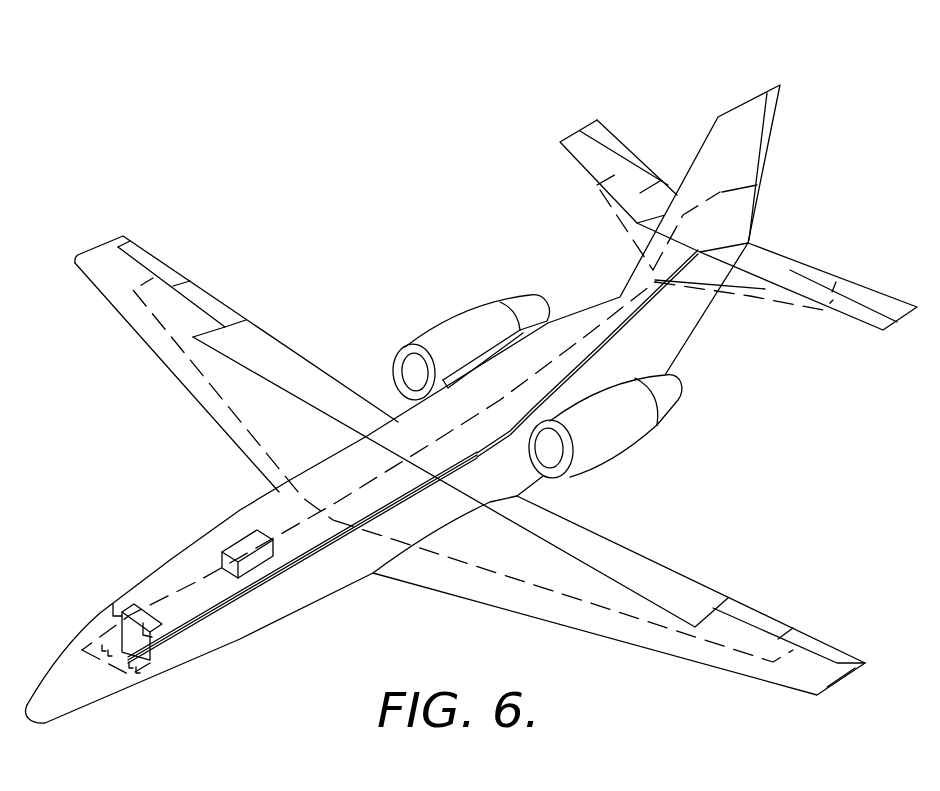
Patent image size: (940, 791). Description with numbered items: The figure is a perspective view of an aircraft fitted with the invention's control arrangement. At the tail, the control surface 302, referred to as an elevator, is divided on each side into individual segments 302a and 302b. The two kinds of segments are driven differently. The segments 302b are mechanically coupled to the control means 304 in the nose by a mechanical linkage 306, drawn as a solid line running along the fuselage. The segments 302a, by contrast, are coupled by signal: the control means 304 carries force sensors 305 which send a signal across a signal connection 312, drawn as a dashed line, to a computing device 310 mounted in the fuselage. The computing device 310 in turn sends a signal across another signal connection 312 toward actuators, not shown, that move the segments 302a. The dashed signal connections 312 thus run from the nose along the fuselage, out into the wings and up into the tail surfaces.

The control surface 302 is at (578, 120).
The individual segments 302a is at (618, 142).
The individual segments 302b is at (662, 183).
The control means 304 is at (122, 600).
The force sensors 305 is at (113, 623).
The mechanical linkage 306 is at (170, 640).
The computing device 310 is at (238, 524).
The signal connection 312 is at (200, 580).